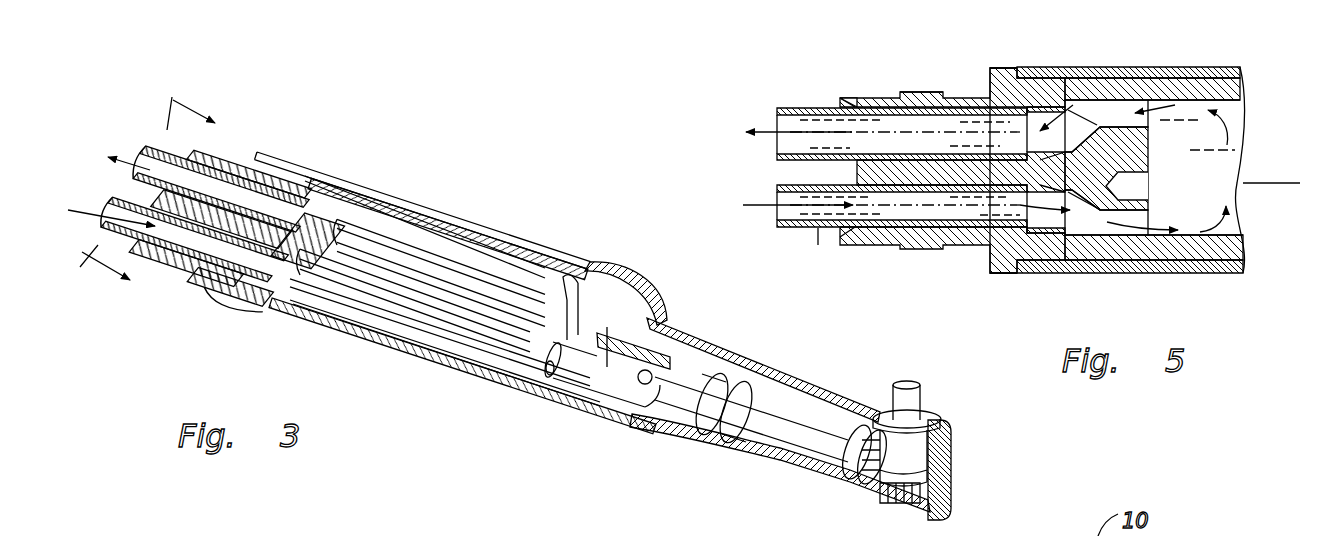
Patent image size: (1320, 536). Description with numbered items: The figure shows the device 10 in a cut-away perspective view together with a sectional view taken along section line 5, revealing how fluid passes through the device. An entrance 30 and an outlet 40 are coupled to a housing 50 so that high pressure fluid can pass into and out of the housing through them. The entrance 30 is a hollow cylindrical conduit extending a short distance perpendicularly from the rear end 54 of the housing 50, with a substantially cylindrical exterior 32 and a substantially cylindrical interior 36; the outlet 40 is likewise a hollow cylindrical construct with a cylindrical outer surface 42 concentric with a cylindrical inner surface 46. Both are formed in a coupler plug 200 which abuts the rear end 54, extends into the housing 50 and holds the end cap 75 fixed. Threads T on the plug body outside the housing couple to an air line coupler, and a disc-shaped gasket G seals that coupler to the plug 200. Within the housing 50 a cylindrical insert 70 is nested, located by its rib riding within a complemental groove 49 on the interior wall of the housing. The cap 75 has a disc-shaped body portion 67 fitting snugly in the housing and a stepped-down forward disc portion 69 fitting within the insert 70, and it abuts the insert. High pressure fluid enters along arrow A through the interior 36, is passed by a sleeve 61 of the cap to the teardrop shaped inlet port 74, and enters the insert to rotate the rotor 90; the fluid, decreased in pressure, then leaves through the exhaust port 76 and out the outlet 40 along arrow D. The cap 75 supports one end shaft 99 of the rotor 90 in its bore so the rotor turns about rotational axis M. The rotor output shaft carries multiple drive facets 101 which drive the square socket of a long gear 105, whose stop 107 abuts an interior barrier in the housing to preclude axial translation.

In FIG. 3, the device 10 is at (404, 160).
In FIG. 3, the entrance 30 is at (106, 227).
In FIG. 5, the entrance 30 is at (776, 250).
In FIG. 5, the exterior 32 is at (818, 246).
In FIG. 5, the interior 36 is at (917, 218).
In FIG. 3, the outlet 40 is at (153, 146).
In FIG. 5, the outlet 40 is at (785, 106).
In FIG. 5, the cylindrical outer surface 42 is at (830, 105).
In FIG. 5, the cylindrical inner surface 46 is at (925, 146).
In FIG. 3, the groove 49 is at (450, 223).
In FIG. 5, the housing 50 is at (1153, 76).
In FIG. 5, the rear end 54 is at (1003, 66).
In FIG. 3, the sleeve 61 is at (245, 280).
In FIG. 5, the sleeve 61 is at (1052, 216).
In FIG. 5, the disc-shaped body portion 67 is at (1087, 72).
In FIG. 5, the stepped-down forward disc portion 69 is at (1130, 238).
In FIG. 5, the insert 70 is at (1213, 88).
In FIG. 5, the inlet port 74 is at (1088, 228).
In FIG. 5, the end cap 75 is at (1090, 98).
In FIG. 5, the exhaust port 76 is at (1108, 112).
In FIG. 5, the rotor 90 is at (1237, 172).
In FIG. 5, the support shaft 99 is at (1143, 199).
In FIG. 3, the drive facets 101 is at (608, 375).
In FIG. 3, the long gear 105 is at (800, 440).
In FIG. 3, the stop 107 is at (718, 420).
In FIG. 5, the coupler plug 200 is at (942, 268).
In FIG. 3, the section line 5— 5 is at (157, 204).
In FIG. 3, the arrow A is at (98, 202).
In FIG. 5, the arrow A is at (762, 203).
In FIG. 3, the arrow D is at (120, 158).
In FIG. 5, the arrow D is at (760, 130).
In FIG. 5, the gasket G is at (850, 95).
In FIG. 5, the threads T is at (917, 90).
In FIG. 5, the rotational axis M is at (1265, 186).